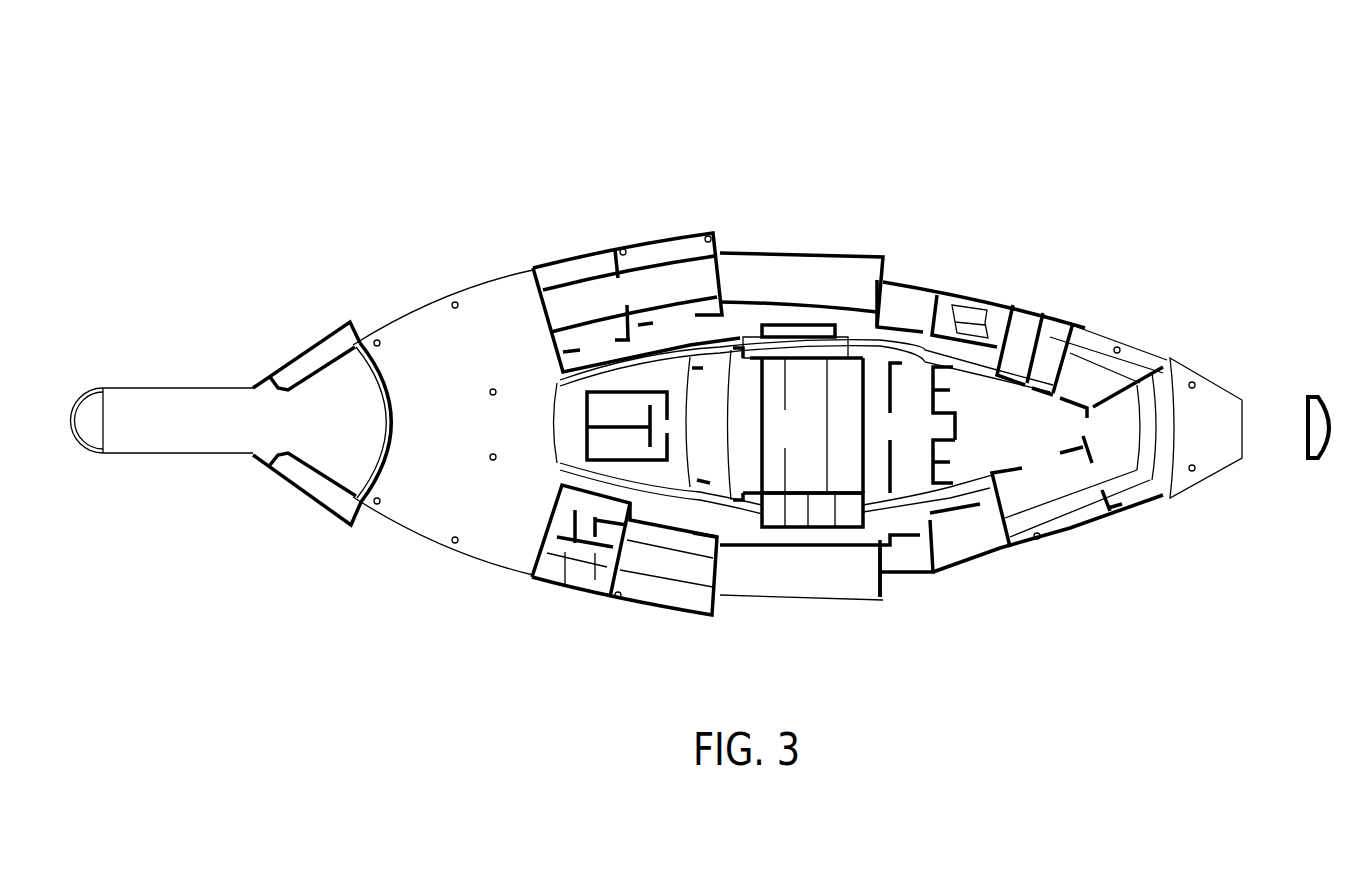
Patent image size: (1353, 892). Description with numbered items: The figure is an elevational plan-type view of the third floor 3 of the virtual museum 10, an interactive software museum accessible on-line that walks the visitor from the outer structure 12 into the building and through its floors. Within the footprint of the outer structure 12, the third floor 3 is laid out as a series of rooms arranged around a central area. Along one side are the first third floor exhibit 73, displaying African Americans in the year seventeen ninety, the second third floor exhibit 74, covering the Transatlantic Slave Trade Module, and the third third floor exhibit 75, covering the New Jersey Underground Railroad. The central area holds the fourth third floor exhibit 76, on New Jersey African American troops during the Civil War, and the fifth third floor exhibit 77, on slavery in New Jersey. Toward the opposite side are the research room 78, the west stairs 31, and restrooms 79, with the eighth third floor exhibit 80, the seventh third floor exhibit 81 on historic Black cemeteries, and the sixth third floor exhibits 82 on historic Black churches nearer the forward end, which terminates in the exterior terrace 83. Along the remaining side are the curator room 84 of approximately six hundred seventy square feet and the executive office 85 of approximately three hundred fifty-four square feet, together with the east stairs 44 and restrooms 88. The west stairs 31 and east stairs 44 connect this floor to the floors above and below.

The 3D virtual museum 10 is at (302, 140).
The outer structure 12 is at (391, 288).
The third floor 3 is at (298, 521).
The west stairs 31 is at (990, 293).
The east stairs 44 is at (580, 588).
The Third Floor Exhibit 1 73 is at (660, 600).
The Third Floor Exhibit 2 74 is at (560, 268).
The Third Floor Exhibit 3 75 is at (667, 247).
The Third Floor Exhibit 4 76 is at (748, 418).
The Third Floor Exhibit 5 77 is at (815, 417).
The research room 78 is at (905, 280).
The restrooms 79 is at (1040, 318).
The Third Floor Exhibit 8 80 is at (1112, 340).
The Third Floor Exhibit 7 81 is at (1140, 510).
The Third Floor Exhibits 6 and 6a 82 is at (1065, 538).
The exterior terrace 83 is at (1205, 382).
The curator room 84 is at (975, 555).
The executive office 85 is at (910, 568).
The restrooms 88 is at (652, 447).